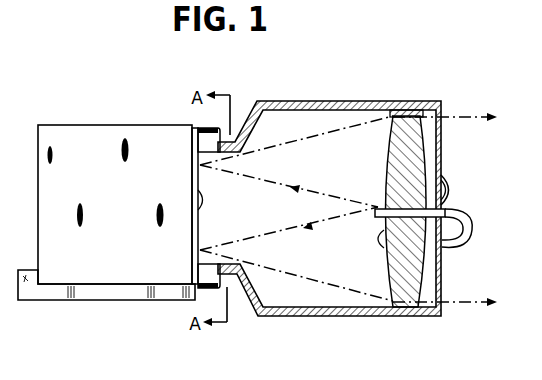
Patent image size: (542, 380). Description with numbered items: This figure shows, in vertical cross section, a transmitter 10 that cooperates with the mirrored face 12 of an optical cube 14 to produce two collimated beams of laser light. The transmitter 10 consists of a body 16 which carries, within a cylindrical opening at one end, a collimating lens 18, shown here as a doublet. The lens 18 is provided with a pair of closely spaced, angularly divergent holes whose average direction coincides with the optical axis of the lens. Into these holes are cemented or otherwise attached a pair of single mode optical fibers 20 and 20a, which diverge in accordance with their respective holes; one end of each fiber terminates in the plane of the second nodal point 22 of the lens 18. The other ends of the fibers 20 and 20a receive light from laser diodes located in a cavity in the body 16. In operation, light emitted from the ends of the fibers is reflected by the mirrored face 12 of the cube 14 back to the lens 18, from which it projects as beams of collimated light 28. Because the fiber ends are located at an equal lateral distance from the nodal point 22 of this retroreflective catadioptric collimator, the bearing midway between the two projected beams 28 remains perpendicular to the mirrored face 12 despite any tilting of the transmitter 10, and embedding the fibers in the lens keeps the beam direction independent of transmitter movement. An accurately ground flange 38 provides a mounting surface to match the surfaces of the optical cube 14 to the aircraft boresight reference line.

The transmitter 10 is at (329, 180).
The mirrored face 12 is at (192, 172).
The optical cube 14 is at (88, 127).
The body 16 is at (320, 102).
The collimating lens 18 is at (417, 112).
The single mode optical fiber 20 is at (439, 230).
The single mode optical fiber 20a is at (451, 187).
The second nodal point 22 is at (448, 246).
The beams of collimated light 28 is at (448, 116).
The flange 38 is at (36, 290).